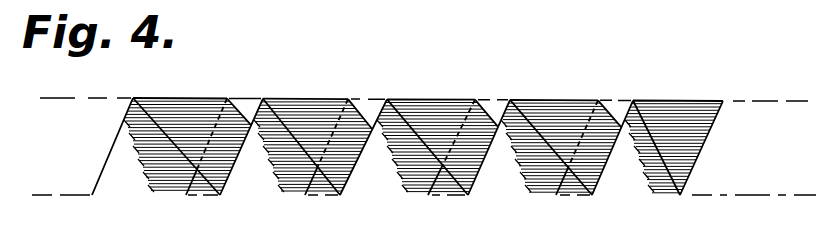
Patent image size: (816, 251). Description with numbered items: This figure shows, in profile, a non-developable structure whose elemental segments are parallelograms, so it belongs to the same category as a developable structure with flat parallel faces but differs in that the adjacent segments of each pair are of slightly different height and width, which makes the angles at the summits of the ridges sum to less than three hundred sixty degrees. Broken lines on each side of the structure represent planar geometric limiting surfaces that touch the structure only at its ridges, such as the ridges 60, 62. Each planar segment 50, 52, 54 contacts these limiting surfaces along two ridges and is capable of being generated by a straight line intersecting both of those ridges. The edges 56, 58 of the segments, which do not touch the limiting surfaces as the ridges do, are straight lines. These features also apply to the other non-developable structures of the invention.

The segment 50 is at (138, 187).
The segment 52 is at (203, 177).
The segment 54 is at (290, 175).
The edge 56 is at (252, 104).
The edge 58 is at (337, 186).
The ridge 60 is at (153, 97).
The ridge 62 is at (340, 98).